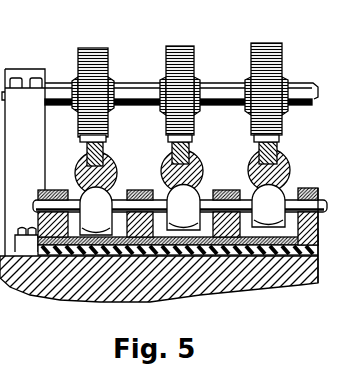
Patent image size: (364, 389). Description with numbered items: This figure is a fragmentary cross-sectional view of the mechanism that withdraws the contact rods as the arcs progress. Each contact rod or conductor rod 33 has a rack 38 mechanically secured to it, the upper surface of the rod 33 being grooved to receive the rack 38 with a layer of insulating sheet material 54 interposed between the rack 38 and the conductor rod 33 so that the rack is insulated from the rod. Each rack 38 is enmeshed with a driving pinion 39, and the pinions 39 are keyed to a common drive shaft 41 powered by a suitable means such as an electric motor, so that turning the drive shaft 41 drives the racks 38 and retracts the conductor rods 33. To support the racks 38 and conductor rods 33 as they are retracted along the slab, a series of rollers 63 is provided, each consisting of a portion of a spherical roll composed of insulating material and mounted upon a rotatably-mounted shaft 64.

The conductor rod 33 is at (282, 162).
The rack 38 is at (87, 152).
The driving pinion 39 is at (178, 46).
The drive shaft 41 is at (232, 82).
The insulating sheet material 54 is at (107, 163).
The roller 63 is at (110, 200).
The shaft 64 is at (203, 198).